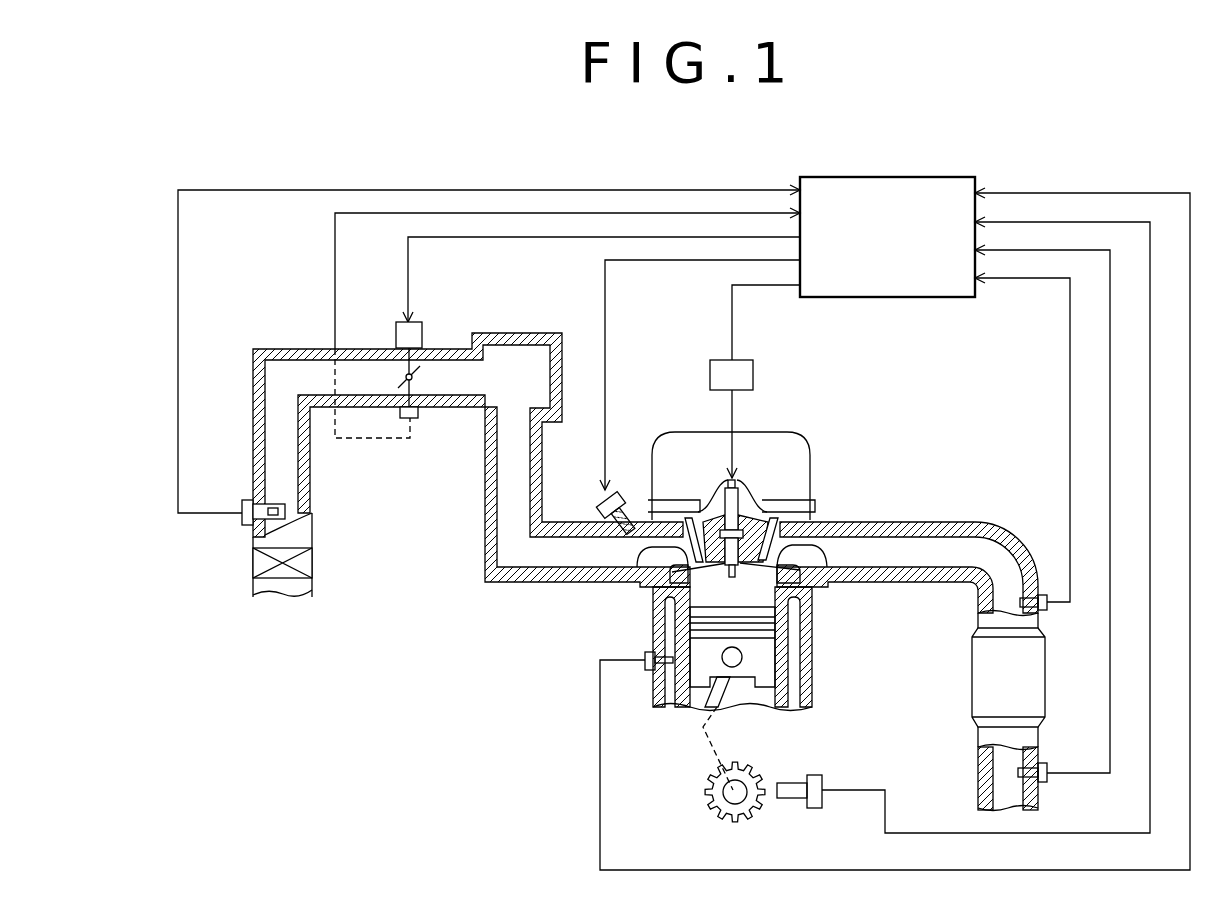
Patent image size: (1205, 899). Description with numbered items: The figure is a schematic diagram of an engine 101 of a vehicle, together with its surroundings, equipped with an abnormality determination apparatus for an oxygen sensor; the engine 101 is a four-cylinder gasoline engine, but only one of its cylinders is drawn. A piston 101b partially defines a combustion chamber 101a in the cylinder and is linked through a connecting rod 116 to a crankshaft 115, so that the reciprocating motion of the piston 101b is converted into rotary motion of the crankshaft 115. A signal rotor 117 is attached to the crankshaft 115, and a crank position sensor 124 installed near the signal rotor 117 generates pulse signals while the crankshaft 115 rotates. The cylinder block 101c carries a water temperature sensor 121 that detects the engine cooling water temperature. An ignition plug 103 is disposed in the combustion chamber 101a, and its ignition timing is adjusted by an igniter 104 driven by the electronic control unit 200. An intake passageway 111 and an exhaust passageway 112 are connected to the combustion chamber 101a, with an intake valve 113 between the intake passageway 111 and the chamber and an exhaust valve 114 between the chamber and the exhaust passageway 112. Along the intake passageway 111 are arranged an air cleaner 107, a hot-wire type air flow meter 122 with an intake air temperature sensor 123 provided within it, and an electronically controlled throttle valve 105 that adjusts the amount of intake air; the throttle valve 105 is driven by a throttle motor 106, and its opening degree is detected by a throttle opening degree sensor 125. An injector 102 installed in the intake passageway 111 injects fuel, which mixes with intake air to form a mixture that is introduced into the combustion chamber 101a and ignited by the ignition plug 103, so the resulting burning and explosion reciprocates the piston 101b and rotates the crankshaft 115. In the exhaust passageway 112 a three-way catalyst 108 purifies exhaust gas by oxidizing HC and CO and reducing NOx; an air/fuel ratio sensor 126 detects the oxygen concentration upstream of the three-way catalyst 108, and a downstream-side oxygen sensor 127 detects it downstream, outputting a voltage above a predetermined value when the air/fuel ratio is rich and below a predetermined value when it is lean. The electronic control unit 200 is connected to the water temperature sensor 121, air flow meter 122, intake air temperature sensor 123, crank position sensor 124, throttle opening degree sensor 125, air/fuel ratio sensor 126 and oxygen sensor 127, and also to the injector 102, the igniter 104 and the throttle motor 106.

The electronic control unit 200 is at (912, 175).
The engine 101 is at (830, 476).
The combustion chamber 101a is at (805, 623).
The piston 101b is at (767, 677).
The cylinder block 101c is at (687, 707).
The injector 102 is at (600, 510).
The ignition plug 103 is at (745, 500).
The igniter 104 is at (755, 375).
The throttle valve 105 is at (400, 376).
The throttle motor 106 is at (423, 335).
The air cleaner 107 is at (312, 563).
The three-way catalyst 108 is at (970, 690).
The intake passageway 111 is at (565, 578).
The exhaust passageway 112 is at (873, 550).
The intake valve 113 is at (627, 572).
The exhaust valve 114 is at (825, 572).
The crankshaft 115 is at (722, 790).
The connecting rod 116 is at (723, 722).
The signal rotor 117 is at (720, 818).
The water temperature sensor 121 is at (642, 653).
The air flow meter 122 is at (243, 505).
The intake air temperature sensor 123 is at (273, 507).
The crank position sensor 124 is at (800, 782).
The throttle opening degree sensor 125 is at (420, 418).
The air/fuel ratio sensor 126 is at (1042, 595).
The oxygen sensor 127 is at (1047, 765).